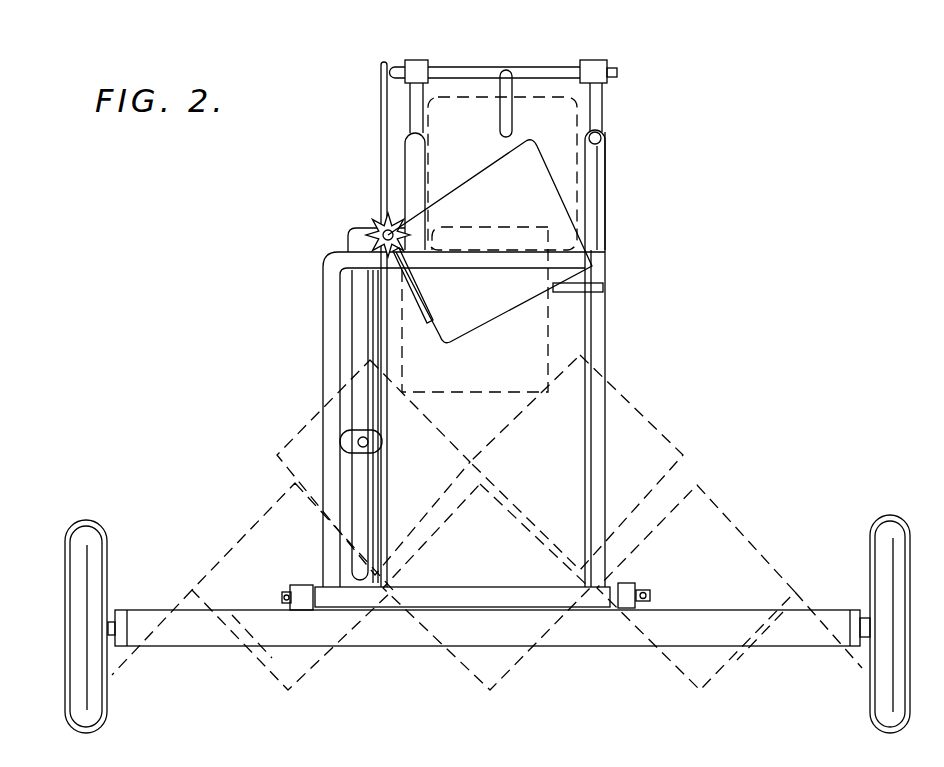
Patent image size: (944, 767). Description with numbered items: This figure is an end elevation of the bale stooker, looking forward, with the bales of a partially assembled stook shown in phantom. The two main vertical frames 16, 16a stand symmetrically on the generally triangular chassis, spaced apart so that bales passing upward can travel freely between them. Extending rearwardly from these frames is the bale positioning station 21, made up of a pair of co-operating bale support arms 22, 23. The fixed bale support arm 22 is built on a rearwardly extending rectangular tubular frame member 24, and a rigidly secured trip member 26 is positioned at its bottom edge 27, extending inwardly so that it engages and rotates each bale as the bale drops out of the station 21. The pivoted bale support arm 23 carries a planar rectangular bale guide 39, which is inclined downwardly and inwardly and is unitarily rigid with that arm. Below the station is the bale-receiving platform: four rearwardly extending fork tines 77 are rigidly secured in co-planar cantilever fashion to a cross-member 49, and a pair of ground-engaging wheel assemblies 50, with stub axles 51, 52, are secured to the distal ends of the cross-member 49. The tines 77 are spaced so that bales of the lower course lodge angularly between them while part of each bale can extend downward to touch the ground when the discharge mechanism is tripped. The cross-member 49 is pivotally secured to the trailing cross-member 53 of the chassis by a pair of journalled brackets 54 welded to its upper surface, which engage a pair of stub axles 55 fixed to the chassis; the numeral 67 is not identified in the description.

The main vertical frame 16 is at (413, 147).
The main vertical frame 16a is at (597, 152).
The bale positioning station 21 is at (462, 92).
The bale support arm 22 is at (612, 226).
The bale support arm 23 is at (373, 223).
The tubular frame member 24 is at (604, 186).
The trip member 26 is at (573, 292).
The bottom edge 27 is at (598, 281).
The bale guide 39 is at (420, 297).
The cross-member 49 is at (140, 612).
The ground-engaging wheel assembly 50 is at (78, 697).
The stub axle 51 is at (110, 615).
The stub axle 52 is at (867, 612).
The trailing cross-member 53 is at (502, 590).
The journalled bracket 54 is at (303, 593).
The stub axle 55 is at (285, 591).
The base member 67 is at (437, 762).
The fork tine 77 is at (135, 648).